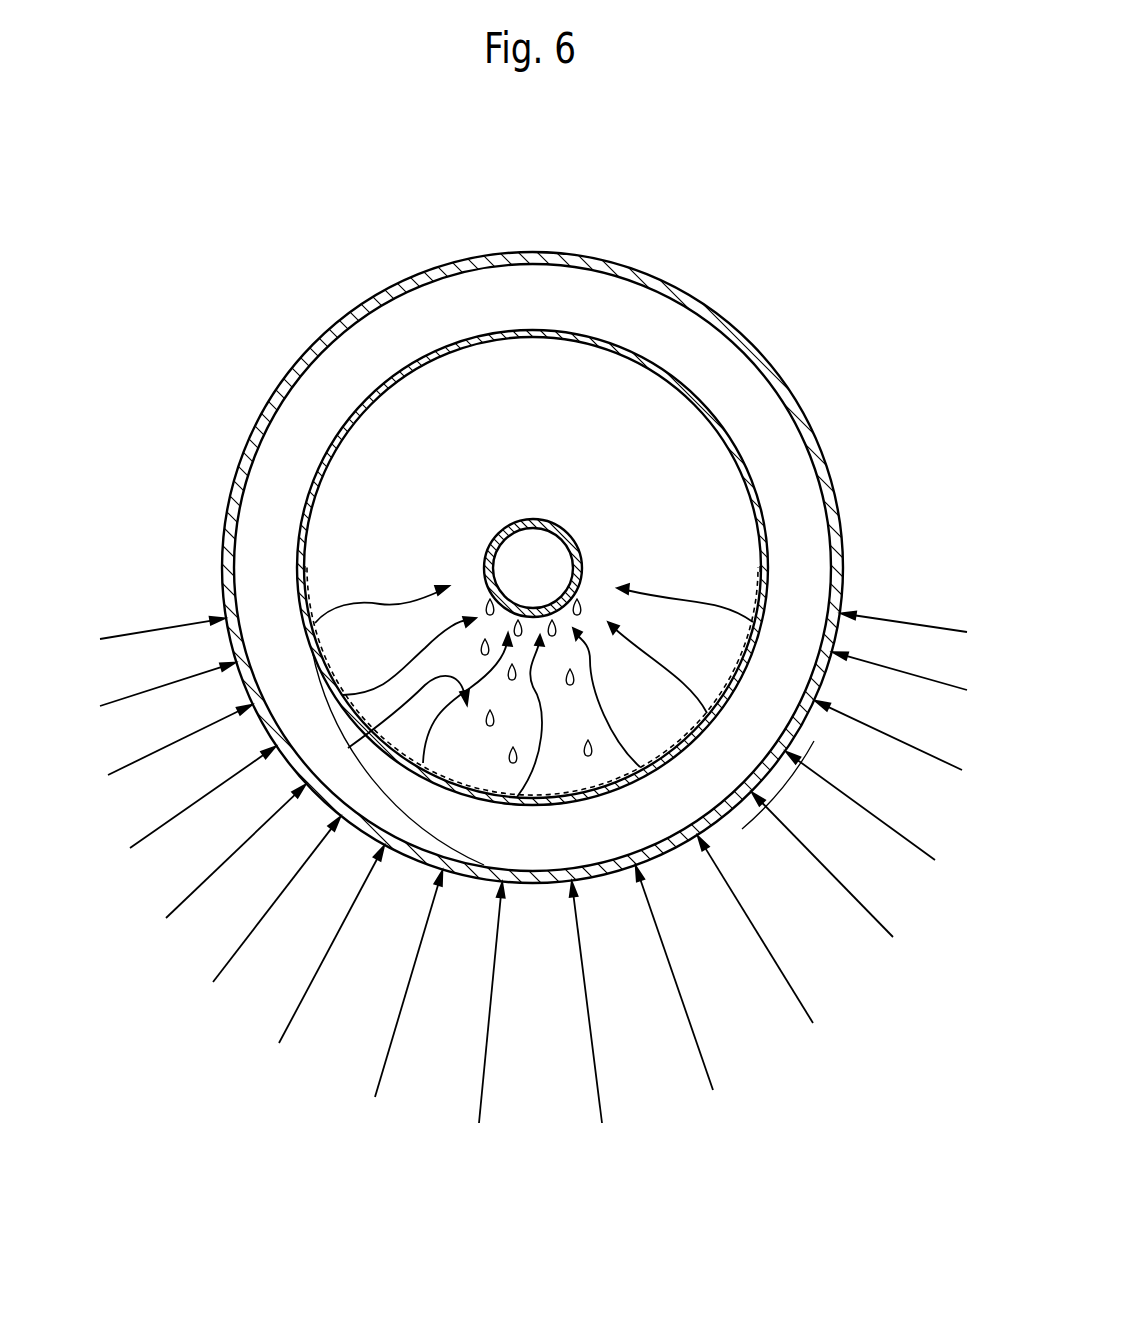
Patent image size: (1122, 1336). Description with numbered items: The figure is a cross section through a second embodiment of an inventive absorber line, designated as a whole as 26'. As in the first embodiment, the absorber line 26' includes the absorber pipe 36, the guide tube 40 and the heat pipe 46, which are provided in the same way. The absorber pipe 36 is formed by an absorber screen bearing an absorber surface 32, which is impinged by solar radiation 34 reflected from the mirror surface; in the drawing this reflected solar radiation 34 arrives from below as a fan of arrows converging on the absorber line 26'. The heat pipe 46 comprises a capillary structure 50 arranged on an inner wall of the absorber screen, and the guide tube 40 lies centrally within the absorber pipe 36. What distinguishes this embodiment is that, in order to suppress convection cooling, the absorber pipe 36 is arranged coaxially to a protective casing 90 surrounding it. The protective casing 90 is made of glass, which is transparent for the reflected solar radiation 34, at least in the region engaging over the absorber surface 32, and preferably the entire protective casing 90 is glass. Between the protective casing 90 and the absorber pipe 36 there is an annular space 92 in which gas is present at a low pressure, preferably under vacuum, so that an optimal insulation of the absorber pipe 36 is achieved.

The absorber line 26' is at (536, 561).
The absorber pipe 36 is at (409, 350).
The guide tube 40 is at (572, 520).
The capillary structure 50 is at (740, 650).
The annular space 92 is at (668, 812).
The protective casing 90 is at (777, 763).
The absorber surface 32 is at (520, 795).
The heat pipe 46 is at (534, 690).
The solar radiation 34 is at (492, 980).